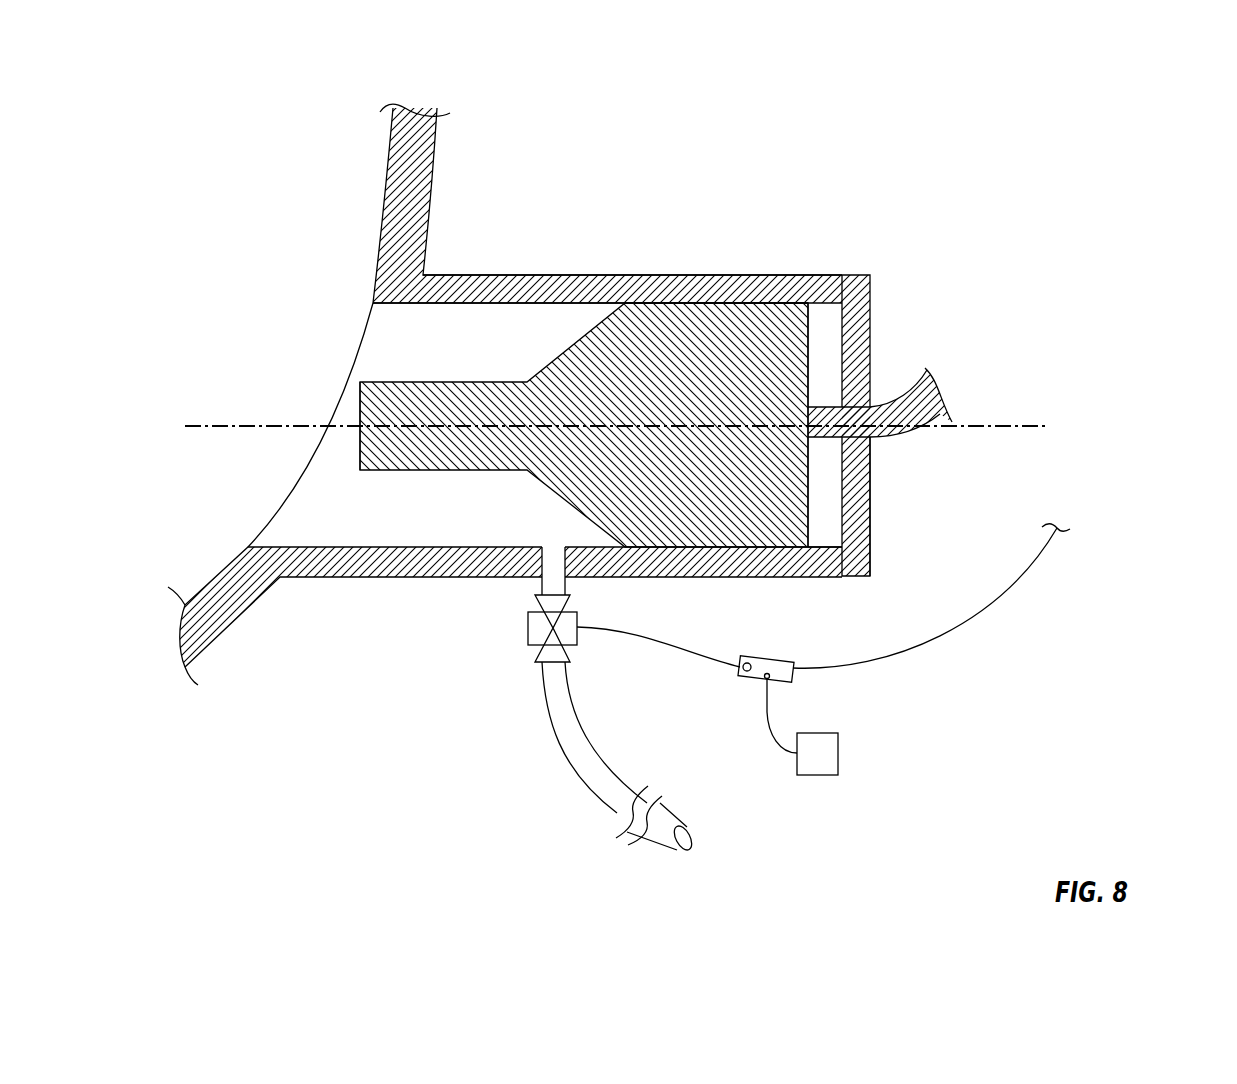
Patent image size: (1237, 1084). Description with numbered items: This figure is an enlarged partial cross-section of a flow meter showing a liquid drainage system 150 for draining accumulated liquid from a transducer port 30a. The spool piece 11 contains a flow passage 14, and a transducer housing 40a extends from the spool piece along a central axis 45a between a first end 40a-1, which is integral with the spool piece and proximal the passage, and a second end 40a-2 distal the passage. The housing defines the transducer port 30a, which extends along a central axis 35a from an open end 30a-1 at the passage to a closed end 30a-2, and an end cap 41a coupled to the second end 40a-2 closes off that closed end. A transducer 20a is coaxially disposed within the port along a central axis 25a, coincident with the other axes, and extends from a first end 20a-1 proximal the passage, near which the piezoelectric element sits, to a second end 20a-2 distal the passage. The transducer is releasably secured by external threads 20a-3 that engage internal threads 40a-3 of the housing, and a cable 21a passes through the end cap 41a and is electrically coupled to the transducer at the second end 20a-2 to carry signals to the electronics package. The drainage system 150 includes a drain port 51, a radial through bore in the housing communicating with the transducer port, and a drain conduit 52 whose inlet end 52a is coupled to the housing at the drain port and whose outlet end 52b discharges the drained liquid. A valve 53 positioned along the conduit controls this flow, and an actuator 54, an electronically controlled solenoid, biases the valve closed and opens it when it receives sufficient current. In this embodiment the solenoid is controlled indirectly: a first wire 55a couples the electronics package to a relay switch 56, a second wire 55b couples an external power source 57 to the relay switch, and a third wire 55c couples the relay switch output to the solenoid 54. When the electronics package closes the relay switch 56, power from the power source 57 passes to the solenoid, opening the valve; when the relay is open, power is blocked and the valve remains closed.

The passage 14 is at (274, 187).
The spool piece 11 is at (438, 172).
The transducer housing 40a is at (498, 275).
The transducer port 30a is at (392, 347).
The transducer 20a is at (685, 518).
The first end of transducer 20a-1 is at (357, 397).
The second end of transducer 20a-2 is at (808, 368).
The external threads 20a-3 is at (653, 303).
The internal threads 40a-3 is at (653, 303).
The second end of transducer housing 40a-2 is at (827, 275).
The end cap 41a is at (870, 505).
The closed end of transducer port 30a-2 is at (828, 538).
The cable 21a is at (898, 437).
The central axis of transducer 25a is at (1042, 426).
The central axis of transducer port 35a is at (1042, 426).
The central axis of transducer housing 45a is at (1042, 426).
The open end of transducer port 30a-1 is at (267, 520).
The first end of transducer housing 40a-1 is at (288, 577).
The drain port 51 is at (552, 541).
The inlet end of drain conduit 52a is at (538, 582).
The valve 53 is at (573, 603).
The actuator 54 is at (528, 640).
The drain conduit 52 is at (572, 707).
The outlet end of drain conduit 52b is at (683, 823).
The third wire 55c is at (688, 650).
The relay switch 56 is at (778, 657).
The first wire 55a is at (932, 652).
The second wire 55b is at (770, 707).
The external power source 57 is at (830, 775).
The liquid drainage system 150 is at (500, 703).